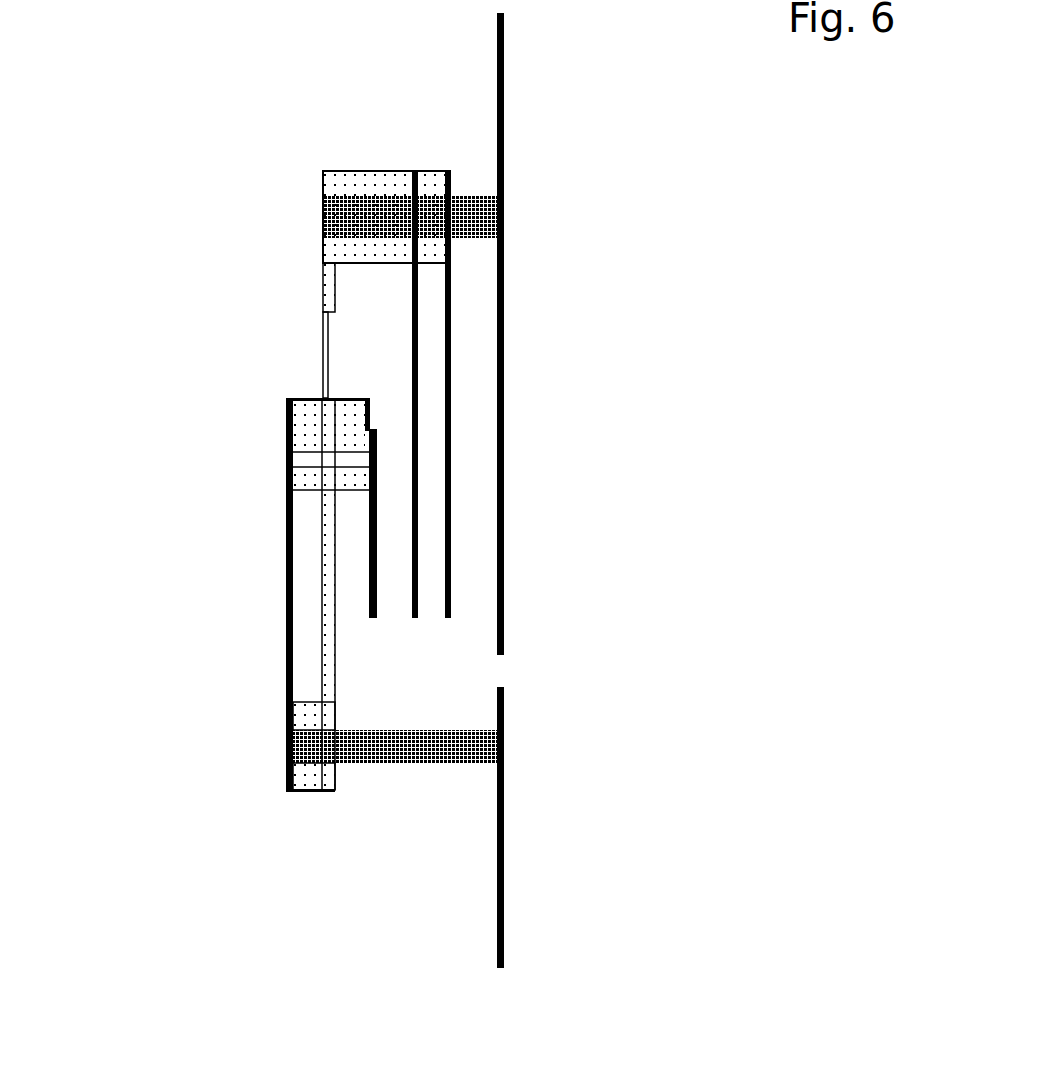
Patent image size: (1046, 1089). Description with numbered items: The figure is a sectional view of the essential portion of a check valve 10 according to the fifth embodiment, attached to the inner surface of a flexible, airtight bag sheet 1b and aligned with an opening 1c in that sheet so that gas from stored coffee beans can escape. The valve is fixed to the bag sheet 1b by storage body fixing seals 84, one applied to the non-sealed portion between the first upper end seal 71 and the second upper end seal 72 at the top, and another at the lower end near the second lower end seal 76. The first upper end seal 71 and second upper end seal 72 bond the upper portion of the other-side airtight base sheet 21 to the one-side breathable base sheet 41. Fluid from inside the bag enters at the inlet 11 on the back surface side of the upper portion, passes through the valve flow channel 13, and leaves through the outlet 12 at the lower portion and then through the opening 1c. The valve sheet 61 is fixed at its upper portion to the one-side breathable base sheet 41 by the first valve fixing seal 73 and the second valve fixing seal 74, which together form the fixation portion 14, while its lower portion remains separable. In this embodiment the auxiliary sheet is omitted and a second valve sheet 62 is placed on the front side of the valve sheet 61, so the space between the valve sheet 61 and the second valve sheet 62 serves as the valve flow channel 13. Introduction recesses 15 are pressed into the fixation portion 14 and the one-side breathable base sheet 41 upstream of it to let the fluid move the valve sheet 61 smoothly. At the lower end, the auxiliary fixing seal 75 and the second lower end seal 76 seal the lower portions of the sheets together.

The bag sheet 1b is at (503, 43).
The opening 1c is at (503, 672).
The check valve 10 is at (450, 172).
The first upper end seal 71 is at (383, 185).
The second upper end seal 72 is at (370, 257).
The storage body fixing seal 84 is at (480, 222).
The introduction recess 15 is at (325, 340).
The inlet 11 is at (335, 283).
The one-side breathable base sheet 41 is at (335, 308).
The other-side airtight base sheet 21 is at (450, 358).
The fixation portion 14 is at (544, 463).
The first valve fixing seal 73 is at (360, 433).
The second valve fixing seal 74 is at (368, 479).
The valve sheet 61 is at (377, 523).
The second valve sheet 62 is at (417, 534).
The valve flow channel 13 is at (407, 565).
The outlet 12 is at (393, 628).
The auxiliary fixing seal 75 is at (300, 717).
The second lower end seal 76 is at (300, 778).